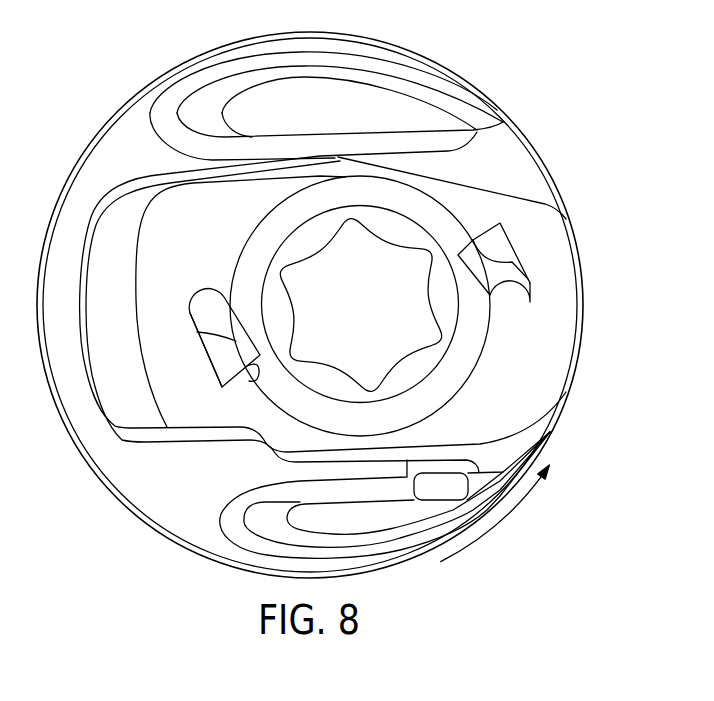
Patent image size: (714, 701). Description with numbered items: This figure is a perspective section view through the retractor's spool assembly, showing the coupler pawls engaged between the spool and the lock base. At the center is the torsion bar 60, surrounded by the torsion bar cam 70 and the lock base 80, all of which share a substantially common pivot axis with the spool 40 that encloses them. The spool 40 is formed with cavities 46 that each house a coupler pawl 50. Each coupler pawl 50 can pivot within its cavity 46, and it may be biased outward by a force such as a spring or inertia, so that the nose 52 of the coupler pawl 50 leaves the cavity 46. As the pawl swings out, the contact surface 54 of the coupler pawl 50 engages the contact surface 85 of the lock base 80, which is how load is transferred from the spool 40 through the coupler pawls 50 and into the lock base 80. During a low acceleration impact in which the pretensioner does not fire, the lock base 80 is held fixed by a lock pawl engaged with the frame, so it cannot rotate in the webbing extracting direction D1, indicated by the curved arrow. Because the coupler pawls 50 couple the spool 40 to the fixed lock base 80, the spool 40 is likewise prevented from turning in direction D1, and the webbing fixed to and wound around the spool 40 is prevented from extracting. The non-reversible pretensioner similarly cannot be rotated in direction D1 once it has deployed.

The spool 40 is at (560, 351).
The cavity 46 is at (213, 362).
The coupler pawl 50 is at (204, 306).
The nose 52 is at (200, 340).
The contact surface 54 is at (253, 375).
The torsion bar 60 is at (323, 277).
The torsion bar cam 70 is at (403, 225).
The lock base 80 is at (437, 392).
The contact surface 85 is at (483, 259).
The webbing extracting direction D1 is at (500, 520).